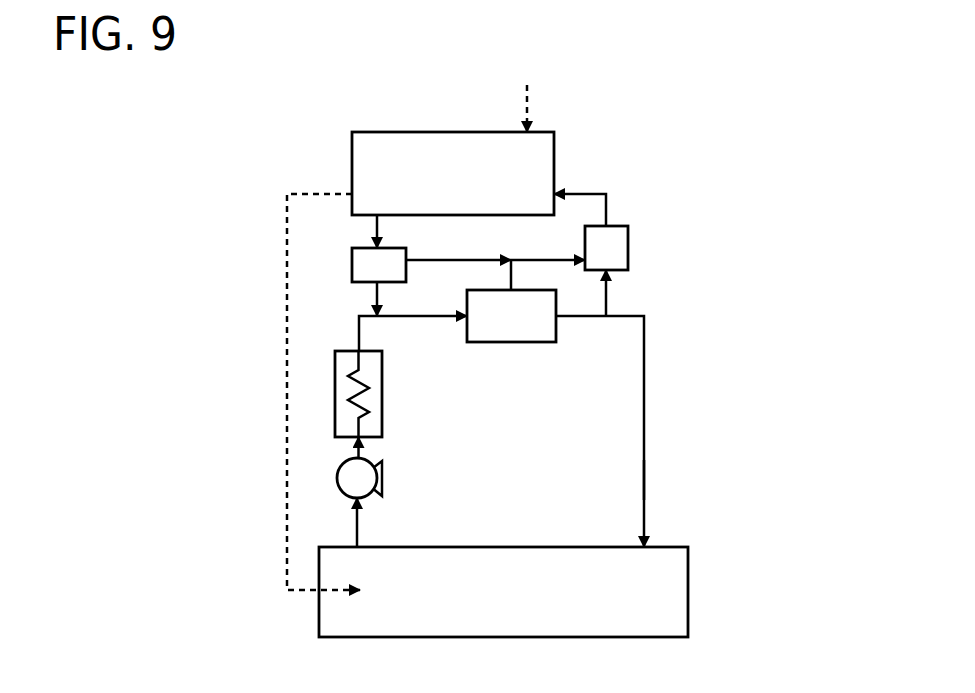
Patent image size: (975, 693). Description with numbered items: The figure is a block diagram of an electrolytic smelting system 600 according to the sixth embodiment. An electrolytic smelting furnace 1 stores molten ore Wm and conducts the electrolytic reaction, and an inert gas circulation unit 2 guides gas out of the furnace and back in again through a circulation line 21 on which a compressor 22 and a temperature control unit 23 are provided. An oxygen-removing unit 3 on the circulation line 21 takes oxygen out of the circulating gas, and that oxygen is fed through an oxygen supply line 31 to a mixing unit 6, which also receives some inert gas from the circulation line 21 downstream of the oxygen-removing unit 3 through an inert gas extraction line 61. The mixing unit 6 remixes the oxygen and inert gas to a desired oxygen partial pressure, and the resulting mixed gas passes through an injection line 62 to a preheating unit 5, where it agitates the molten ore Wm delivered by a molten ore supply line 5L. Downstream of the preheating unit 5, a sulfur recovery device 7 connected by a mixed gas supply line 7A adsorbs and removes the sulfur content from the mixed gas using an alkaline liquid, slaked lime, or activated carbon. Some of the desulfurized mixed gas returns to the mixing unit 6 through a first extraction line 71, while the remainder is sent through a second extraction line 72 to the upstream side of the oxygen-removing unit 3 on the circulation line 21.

The electrolytic smelting system 600 is at (170, 146).
The electrolytic smelting furnace 1 is at (690, 580).
The inert gas circulation unit 2 is at (645, 405).
The circulation line 21 is at (645, 477).
The compressor 22 is at (337, 476).
The temperature control unit 23 is at (335, 390).
The oxygen-removing unit 3 is at (510, 342).
The oxygen supply line 31 is at (511, 275).
The preheating unit 5 is at (556, 138).
The molten ore supply line 5L is at (287, 200).
The mixing unit 6 is at (628, 248).
The inert gas extraction line 61 is at (606, 296).
The injection line 62 is at (606, 212).
The sulfur recovery device 7 is at (351, 281).
The mixed gas supply line 7A is at (372, 230).
The first extraction line 71 is at (563, 262).
The second extraction line 72 is at (372, 303).